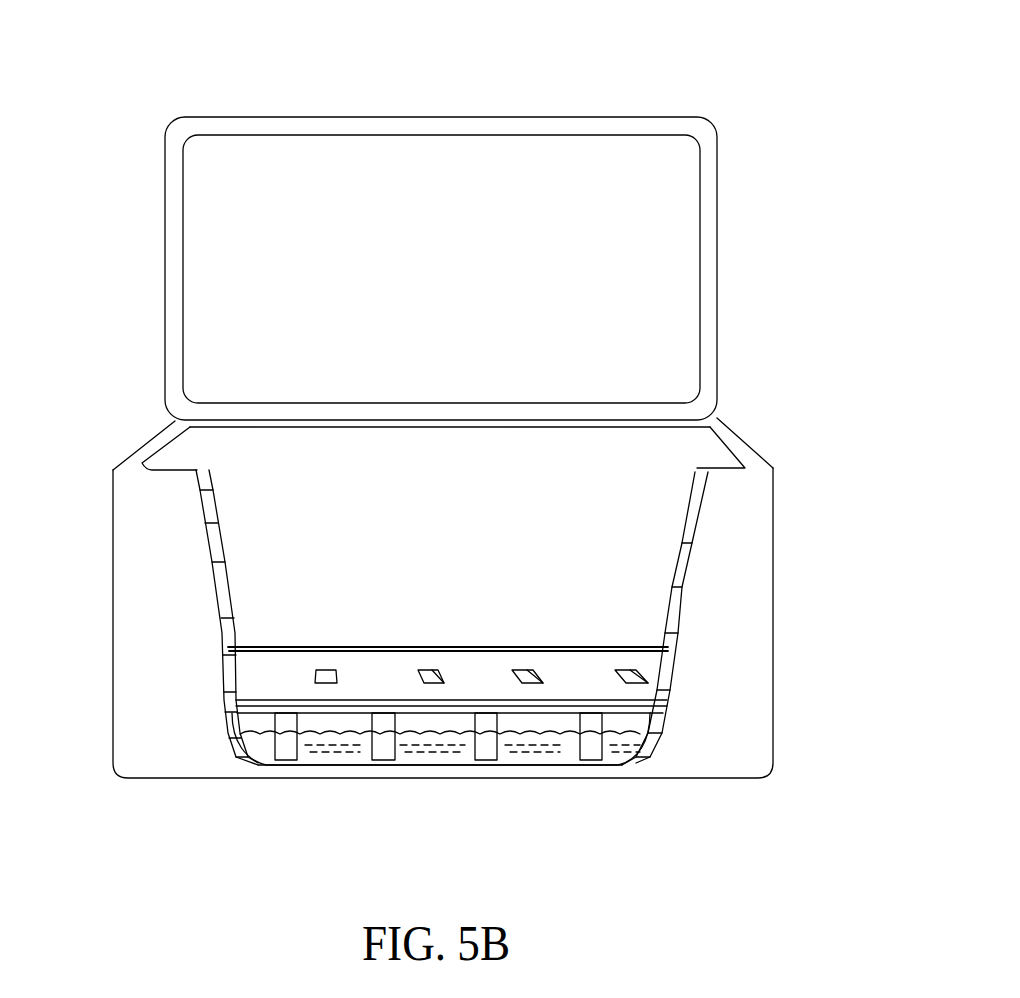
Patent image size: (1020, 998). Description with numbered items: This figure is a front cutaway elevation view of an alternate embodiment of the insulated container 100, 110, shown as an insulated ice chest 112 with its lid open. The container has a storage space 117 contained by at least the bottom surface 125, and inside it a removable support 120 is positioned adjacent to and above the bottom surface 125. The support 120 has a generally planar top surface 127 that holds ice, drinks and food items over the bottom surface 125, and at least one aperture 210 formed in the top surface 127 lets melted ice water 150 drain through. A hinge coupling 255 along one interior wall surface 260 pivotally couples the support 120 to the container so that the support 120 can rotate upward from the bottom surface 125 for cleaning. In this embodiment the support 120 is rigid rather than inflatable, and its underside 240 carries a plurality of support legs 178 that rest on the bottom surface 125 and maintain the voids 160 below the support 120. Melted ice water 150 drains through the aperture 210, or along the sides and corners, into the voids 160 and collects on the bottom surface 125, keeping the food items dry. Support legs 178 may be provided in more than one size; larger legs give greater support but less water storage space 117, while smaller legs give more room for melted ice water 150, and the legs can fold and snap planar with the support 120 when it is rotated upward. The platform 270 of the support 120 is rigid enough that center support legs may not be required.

The cooler 100 is at (652, 72).
The insulated container 110 is at (774, 520).
The ice chest 112 is at (162, 562).
The storage space 117 is at (674, 457).
The interior wall surface 260 is at (440, 507).
The hinge coupling 255 is at (292, 646).
The removable support 120 is at (369, 667).
The top surface 127 is at (460, 667).
The aperture 210 is at (525, 667).
The platform 270 is at (586, 668).
The underside 240 is at (228, 732).
The support legs 178 is at (382, 753).
The melted ice water 150 is at (333, 735).
The bottom surface 125 is at (540, 752).
The voids 160 is at (636, 725).